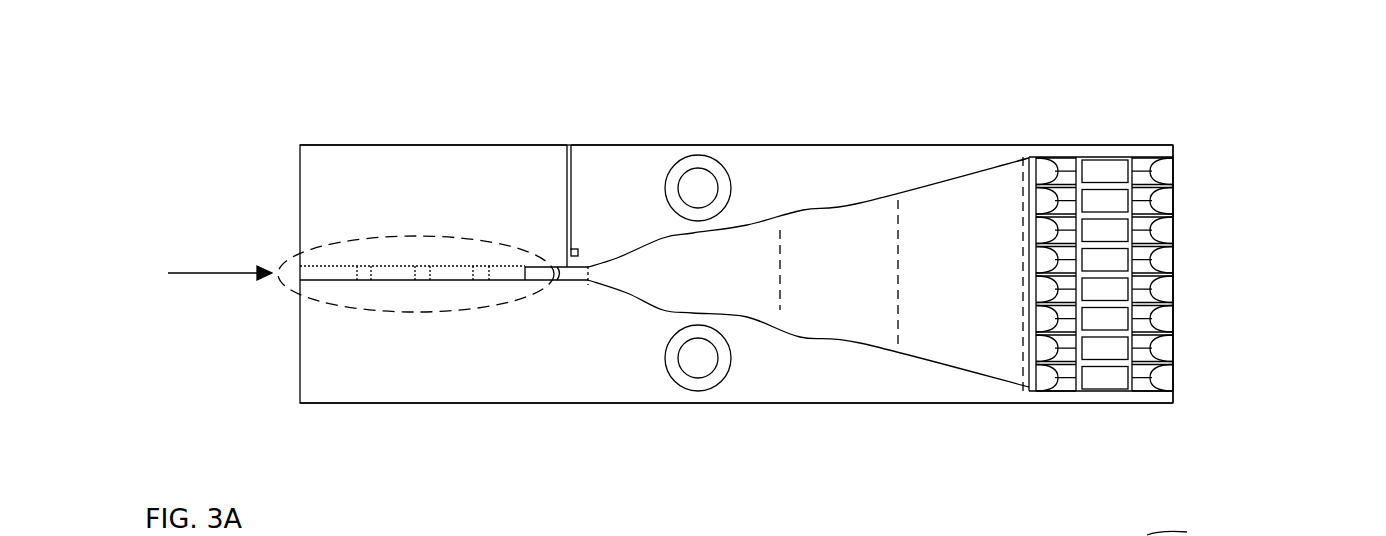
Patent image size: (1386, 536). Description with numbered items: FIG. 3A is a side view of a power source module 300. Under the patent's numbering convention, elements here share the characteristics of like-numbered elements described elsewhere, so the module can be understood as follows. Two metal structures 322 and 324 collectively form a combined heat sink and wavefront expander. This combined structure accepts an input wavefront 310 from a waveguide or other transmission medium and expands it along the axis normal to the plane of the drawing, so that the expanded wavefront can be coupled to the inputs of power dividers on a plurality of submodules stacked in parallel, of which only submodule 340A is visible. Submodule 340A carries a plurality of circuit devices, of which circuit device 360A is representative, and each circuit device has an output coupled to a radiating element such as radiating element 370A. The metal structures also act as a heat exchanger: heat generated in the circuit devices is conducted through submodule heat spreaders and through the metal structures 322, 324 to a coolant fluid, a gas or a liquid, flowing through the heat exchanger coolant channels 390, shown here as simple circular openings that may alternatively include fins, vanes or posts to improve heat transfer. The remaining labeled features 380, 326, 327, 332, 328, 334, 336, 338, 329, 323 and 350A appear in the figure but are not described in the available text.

The power source module 300 is at (298, 43).
The input wavefront 310 is at (220, 259).
The feed region (detail) 380 is at (342, 303).
The metal structure 324 is at (395, 145).
The metal structure 322 is at (405, 403).
The septum 326 is at (566, 145).
The septum tip 327 is at (578, 250).
The waveguide 332 is at (587, 280).
The heat exchanger coolant channels 390 is at (705, 342).
The body 328 is at (810, 145).
The first section 334 is at (780, 310).
The second section 336 is at (898, 347).
The third section 338 is at (1023, 182).
The array section 329 is at (1133, 145).
The end wall 323 is at (1068, 403).
The first horn array 350A is at (1030, 388).
The circuit device 360A is at (1104, 382).
The radiating element 370A is at (1173, 377).
The submodule 340A is at (1173, 236).